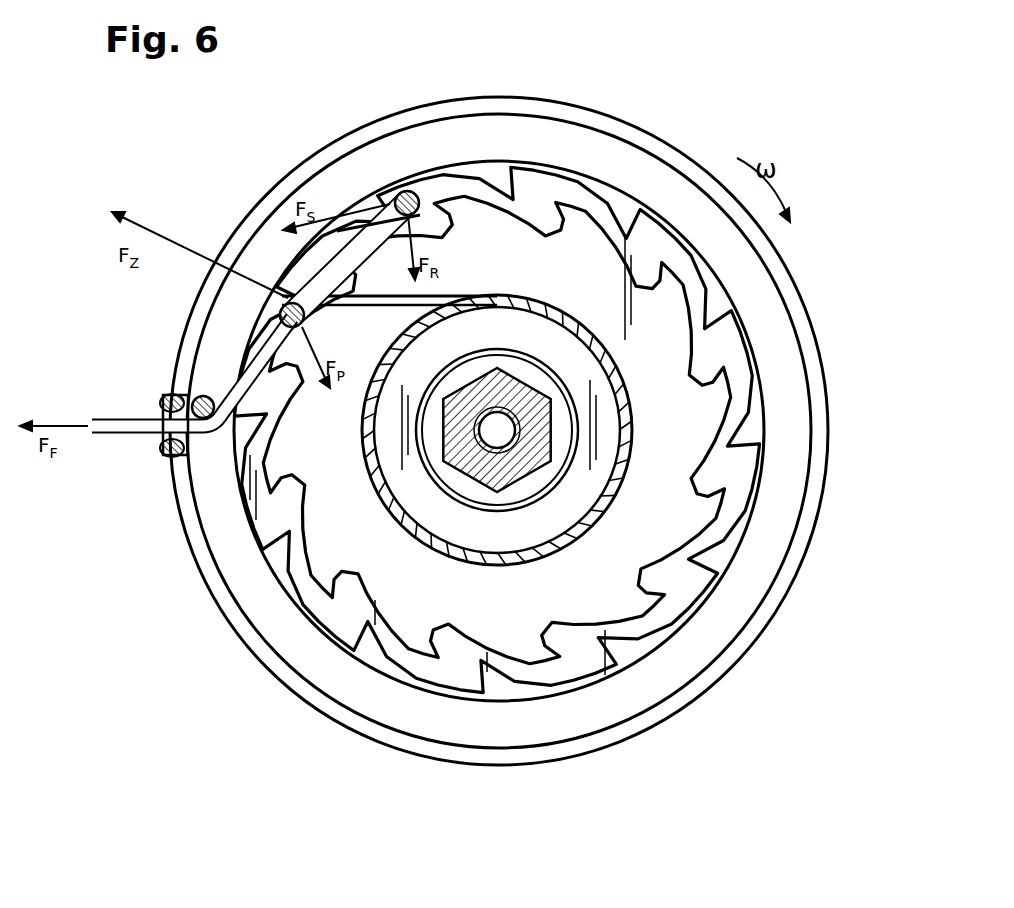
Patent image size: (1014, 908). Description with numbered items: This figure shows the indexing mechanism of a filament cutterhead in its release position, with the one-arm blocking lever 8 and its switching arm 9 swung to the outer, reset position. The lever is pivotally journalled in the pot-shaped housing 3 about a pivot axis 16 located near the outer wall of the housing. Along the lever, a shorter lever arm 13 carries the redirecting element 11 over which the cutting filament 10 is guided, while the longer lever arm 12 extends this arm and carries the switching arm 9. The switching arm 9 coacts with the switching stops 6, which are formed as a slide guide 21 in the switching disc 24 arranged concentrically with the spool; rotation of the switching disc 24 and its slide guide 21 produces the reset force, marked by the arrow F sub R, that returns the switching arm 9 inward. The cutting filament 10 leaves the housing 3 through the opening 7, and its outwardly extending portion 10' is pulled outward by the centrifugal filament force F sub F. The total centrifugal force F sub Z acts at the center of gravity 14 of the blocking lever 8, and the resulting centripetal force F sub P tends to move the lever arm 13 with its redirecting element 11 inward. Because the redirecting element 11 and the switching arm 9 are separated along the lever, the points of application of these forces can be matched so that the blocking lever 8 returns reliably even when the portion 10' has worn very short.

The housing 3 is at (663, 728).
The switching stops 6 is at (547, 210).
The opening 7 is at (168, 455).
The blocking lever 8 is at (285, 292).
The switching arm 9 is at (403, 192).
The cutting filament 10 is at (405, 279).
The outwardly extending portion of the cutting filament 10' is at (126, 398).
The redirecting element 11 is at (265, 300).
The lever arm 12 is at (398, 198).
The lever arm 13 is at (232, 378).
The center of gravity 14 is at (265, 300).
The pivot axis 16 is at (196, 400).
The slide guide 21 is at (330, 612).
The switching disc 24 is at (268, 553).